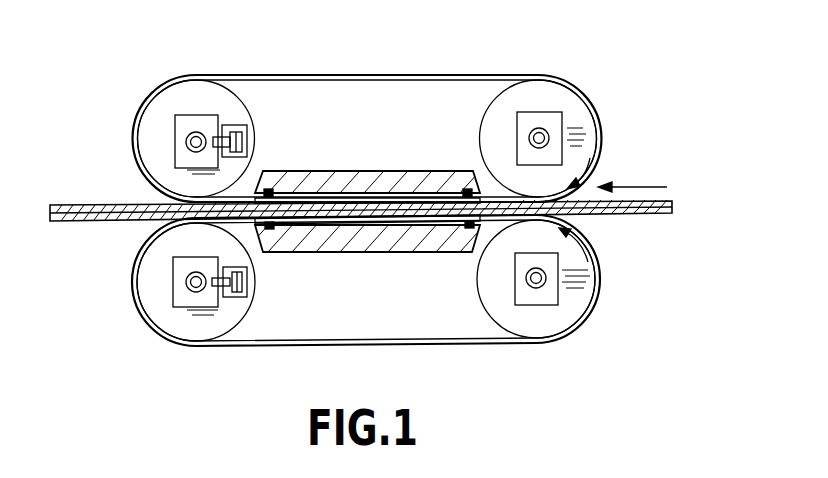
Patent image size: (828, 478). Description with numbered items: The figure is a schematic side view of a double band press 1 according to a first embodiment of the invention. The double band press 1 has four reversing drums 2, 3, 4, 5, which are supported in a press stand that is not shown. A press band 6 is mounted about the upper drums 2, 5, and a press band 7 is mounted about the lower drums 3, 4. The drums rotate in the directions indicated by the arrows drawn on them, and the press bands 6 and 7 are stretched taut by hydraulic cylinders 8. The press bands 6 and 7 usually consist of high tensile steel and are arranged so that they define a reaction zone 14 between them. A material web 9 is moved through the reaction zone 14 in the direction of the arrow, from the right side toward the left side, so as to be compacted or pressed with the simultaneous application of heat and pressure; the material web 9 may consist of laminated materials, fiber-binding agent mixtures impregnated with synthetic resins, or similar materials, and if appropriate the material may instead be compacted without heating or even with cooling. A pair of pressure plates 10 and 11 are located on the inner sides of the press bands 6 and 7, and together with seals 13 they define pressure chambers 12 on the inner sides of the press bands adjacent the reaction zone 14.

The double band press 1 is at (318, 55).
The reversing drum 2 is at (587, 116).
The reversing drum 3 is at (580, 298).
The reversing drum 4 is at (153, 298).
The reversing drum 5 is at (161, 104).
The press band 6 is at (237, 73).
The press band 7 is at (473, 346).
The hydraulic cylinders 8 is at (235, 293).
The material web 9 is at (674, 205).
The pressure plate 10 is at (367, 153).
The pressure plate 11 is at (453, 250).
The pressure chambers 12 is at (363, 195).
The seals 13 is at (269, 190).
The reaction zone 14 is at (352, 220).